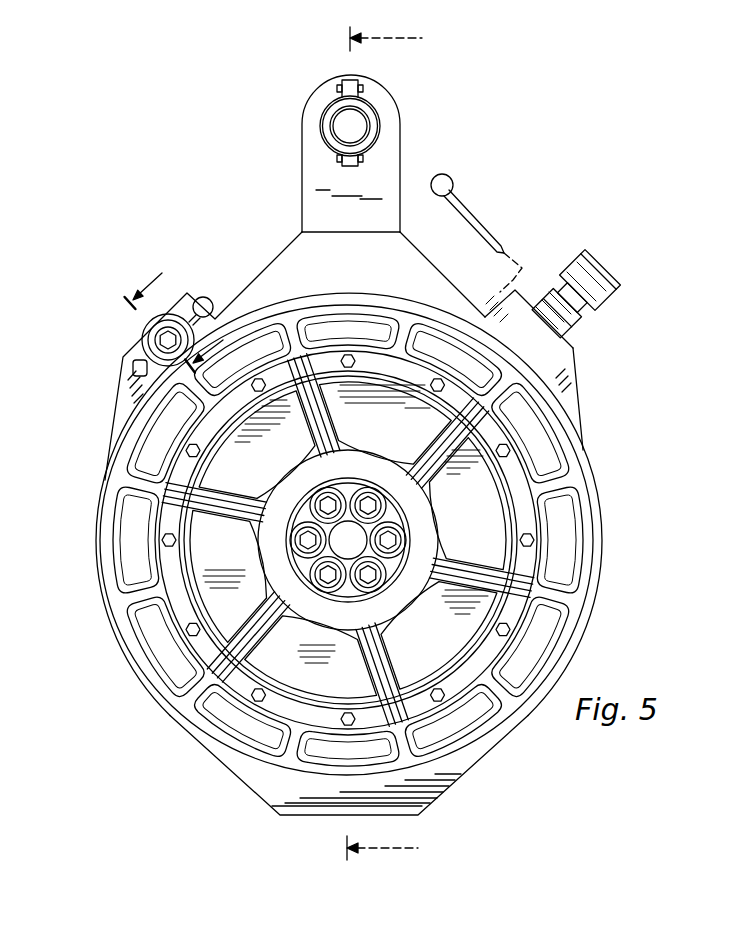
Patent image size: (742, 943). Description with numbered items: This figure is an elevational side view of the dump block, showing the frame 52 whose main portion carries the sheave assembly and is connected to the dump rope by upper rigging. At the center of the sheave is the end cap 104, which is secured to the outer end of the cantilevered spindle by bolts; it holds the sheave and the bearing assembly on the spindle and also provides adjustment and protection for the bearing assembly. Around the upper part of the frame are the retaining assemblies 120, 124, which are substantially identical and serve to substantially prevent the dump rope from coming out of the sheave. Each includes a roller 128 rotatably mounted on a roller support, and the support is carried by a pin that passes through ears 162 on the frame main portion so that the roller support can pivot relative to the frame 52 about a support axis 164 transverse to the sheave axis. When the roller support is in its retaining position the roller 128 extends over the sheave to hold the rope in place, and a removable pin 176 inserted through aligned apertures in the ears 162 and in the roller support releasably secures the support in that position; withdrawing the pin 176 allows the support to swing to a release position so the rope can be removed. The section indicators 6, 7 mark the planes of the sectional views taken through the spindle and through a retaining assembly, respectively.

The frame 52 is at (305, 175).
The end cap 104 is at (374, 458).
The retaining assembly 120 is at (124, 339).
The retaining assembly 124 is at (594, 308).
The roller 128 is at (146, 333).
The ears 162 is at (215, 296).
The support axis 164 is at (487, 292).
The pin 176 is at (479, 221).
The section line 6 is at (393, 443).
The section line 7 is at (184, 311).